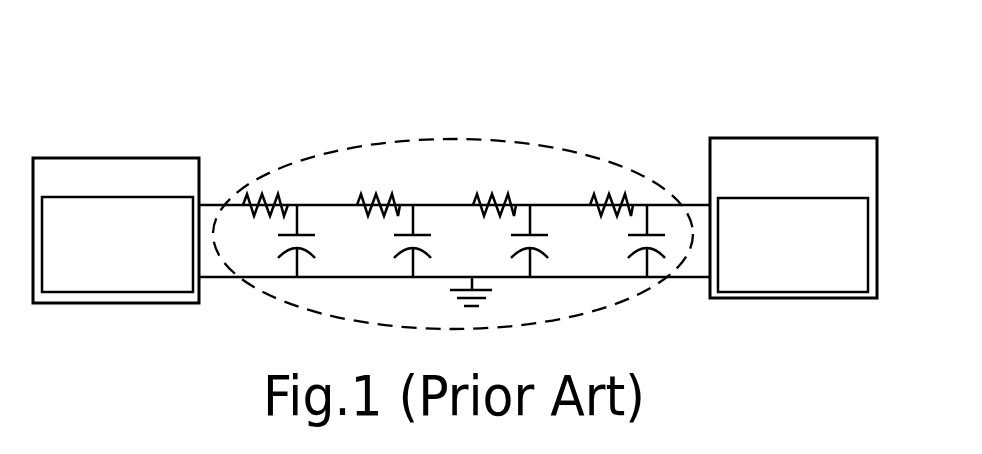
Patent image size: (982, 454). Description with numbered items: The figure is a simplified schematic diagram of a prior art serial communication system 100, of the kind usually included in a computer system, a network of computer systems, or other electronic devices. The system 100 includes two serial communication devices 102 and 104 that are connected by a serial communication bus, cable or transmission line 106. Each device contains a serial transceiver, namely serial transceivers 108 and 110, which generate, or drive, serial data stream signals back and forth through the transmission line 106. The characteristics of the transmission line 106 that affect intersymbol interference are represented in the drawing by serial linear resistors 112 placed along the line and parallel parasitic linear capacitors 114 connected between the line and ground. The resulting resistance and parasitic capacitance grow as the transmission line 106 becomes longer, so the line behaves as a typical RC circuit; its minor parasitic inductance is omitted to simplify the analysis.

The serial communication system 100 is at (583, 89).
The serial communication device 102 is at (104, 156).
The serial communication device 104 is at (773, 136).
The transmission line 106 is at (413, 138).
The serial transceiver 108 is at (128, 291).
The serial transceiver 110 is at (760, 287).
The serial linear resistors 112 is at (592, 200).
The parallel parasitic linear capacitors 114 is at (540, 235).